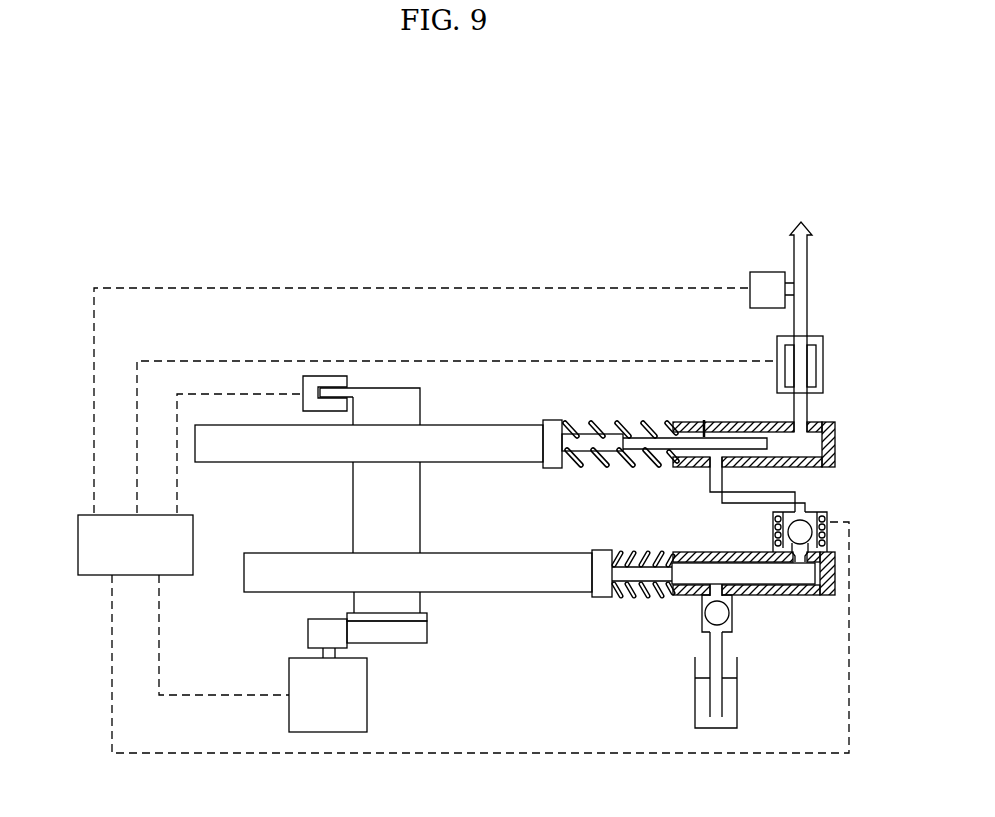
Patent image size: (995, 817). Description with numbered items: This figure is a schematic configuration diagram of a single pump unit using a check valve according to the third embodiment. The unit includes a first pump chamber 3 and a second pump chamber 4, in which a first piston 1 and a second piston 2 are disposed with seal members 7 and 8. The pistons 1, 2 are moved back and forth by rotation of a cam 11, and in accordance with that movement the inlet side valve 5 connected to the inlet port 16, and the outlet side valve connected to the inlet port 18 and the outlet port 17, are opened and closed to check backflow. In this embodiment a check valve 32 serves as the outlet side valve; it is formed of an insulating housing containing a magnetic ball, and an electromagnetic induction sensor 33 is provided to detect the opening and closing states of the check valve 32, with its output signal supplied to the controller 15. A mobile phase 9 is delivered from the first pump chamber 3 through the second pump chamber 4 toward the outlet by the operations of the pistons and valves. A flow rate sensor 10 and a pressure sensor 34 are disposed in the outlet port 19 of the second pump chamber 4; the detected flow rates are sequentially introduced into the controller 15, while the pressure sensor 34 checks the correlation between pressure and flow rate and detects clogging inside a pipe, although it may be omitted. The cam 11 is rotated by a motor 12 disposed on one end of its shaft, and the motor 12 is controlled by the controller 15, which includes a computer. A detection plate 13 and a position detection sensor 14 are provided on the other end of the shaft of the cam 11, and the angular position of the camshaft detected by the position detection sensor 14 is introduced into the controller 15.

The first piston 1 is at (784, 596).
The second piston 2 is at (726, 440).
The first pump chamber 3 is at (837, 577).
The second pump chamber 4 is at (837, 440).
The inlet side valve 5 is at (732, 617).
The seal member 7 is at (697, 551).
The seal member 8 is at (698, 430).
The mobile phase 9 is at (695, 697).
The flow rate sensor 10 is at (823, 358).
The cam 11 is at (460, 583).
The motor 12 is at (367, 692).
The detection plate 13 is at (387, 388).
The position detection sensor 14 is at (327, 376).
The controller 15 is at (78, 545).
The inlet port 16 is at (702, 596).
The outlet port 17 is at (840, 545).
The inlet port 18 is at (713, 465).
The outlet port 19 is at (790, 422).
The check valve 32 is at (822, 520).
The electromagnetic induction sensor 33 is at (773, 532).
The pressure sensor 34 is at (778, 272).